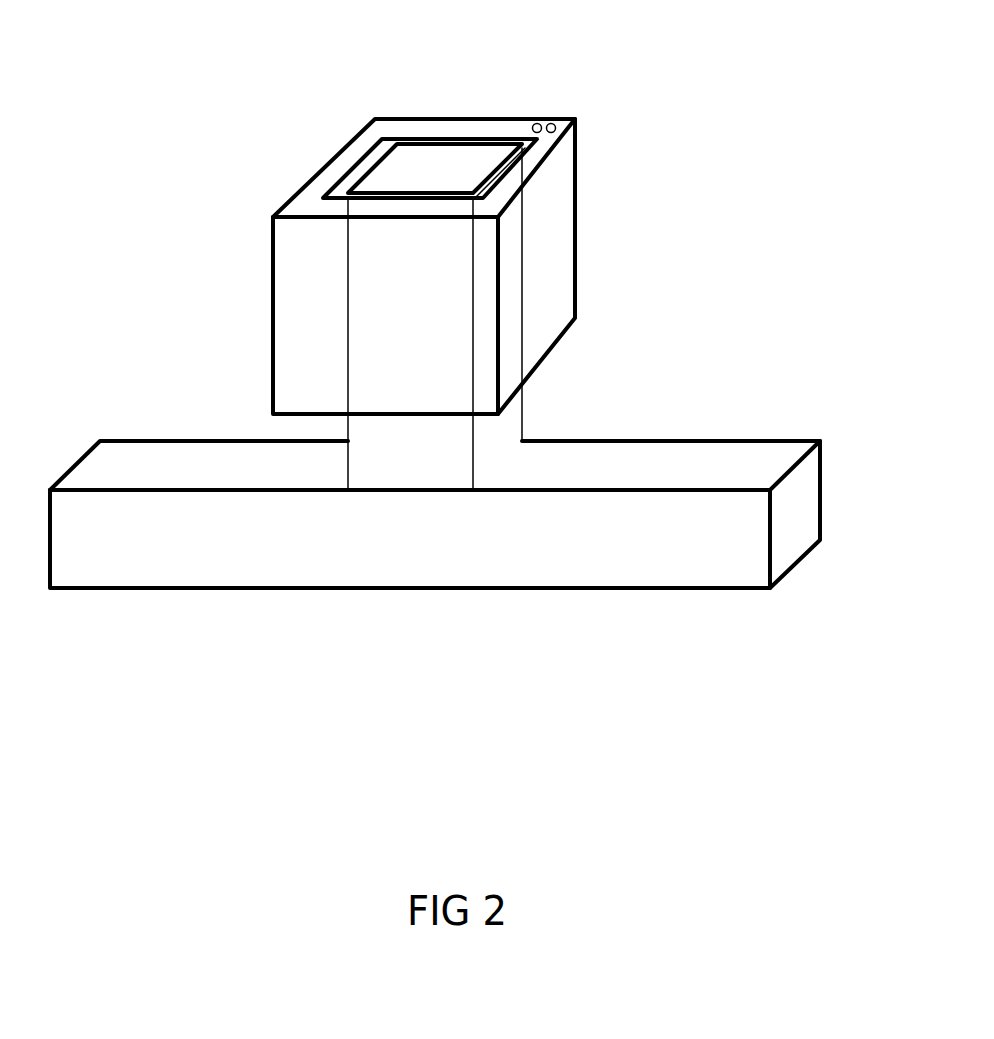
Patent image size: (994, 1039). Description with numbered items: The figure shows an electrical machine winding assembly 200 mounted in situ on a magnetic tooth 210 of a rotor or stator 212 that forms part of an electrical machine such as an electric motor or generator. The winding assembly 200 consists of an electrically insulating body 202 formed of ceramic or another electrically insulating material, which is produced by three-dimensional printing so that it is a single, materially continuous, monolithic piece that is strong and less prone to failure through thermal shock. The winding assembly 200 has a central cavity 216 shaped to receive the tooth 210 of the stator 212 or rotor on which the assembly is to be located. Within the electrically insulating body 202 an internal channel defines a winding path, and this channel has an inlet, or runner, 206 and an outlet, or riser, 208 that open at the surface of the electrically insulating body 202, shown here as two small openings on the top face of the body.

The electrical machine winding assembly 200 is at (310, 144).
The electrically insulating body 202 is at (557, 270).
The inlet 206 is at (541, 124).
The outlet 208 is at (556, 127).
The magnetic tooth 210 is at (510, 427).
The stator 212 is at (374, 632).
The central cavity 216 is at (383, 148).